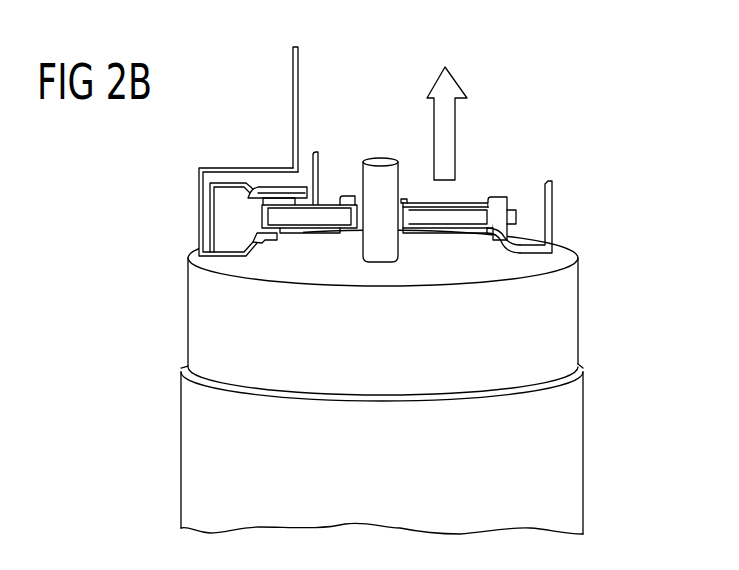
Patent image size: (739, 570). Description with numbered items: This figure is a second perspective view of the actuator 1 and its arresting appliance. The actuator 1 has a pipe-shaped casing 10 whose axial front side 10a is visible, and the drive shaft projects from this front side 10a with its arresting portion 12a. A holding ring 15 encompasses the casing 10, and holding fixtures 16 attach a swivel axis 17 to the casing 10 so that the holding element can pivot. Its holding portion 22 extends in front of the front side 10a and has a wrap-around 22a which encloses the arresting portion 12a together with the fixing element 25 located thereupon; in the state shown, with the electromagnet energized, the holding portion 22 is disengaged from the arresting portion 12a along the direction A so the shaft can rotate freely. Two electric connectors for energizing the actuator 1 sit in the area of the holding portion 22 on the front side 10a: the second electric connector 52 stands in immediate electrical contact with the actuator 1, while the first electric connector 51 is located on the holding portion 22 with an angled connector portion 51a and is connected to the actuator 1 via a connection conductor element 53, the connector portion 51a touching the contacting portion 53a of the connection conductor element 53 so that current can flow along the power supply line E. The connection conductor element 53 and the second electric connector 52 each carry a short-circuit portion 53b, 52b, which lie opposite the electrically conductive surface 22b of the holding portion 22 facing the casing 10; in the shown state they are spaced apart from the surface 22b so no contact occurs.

The actuator 1 is at (383, 369).
The casing 10 is at (200, 338).
The axial front side of casing 10a is at (563, 246).
The arresting portion 12a is at (378, 158).
The holding ring 15 is at (575, 448).
The holding fixtures 16 is at (502, 201).
The swivel axis 17 is at (548, 184).
The holding portion 22 is at (468, 213).
The wrap-around 22a is at (405, 206).
The electrically conductive surface 22b is at (443, 235).
The fixing element 25 is at (342, 195).
The first electric connector 51 is at (313, 160).
The connector portion 51a is at (292, 236).
The second electric connector 52 is at (548, 212).
The short-circuit portion 52b is at (497, 240).
The connection conductor element 53 is at (222, 146).
The contacting portion 53a is at (274, 192).
The short-circuit portion 53b is at (269, 243).
The direction of disengagement A is at (447, 122).
The power supply line E is at (292, 53).